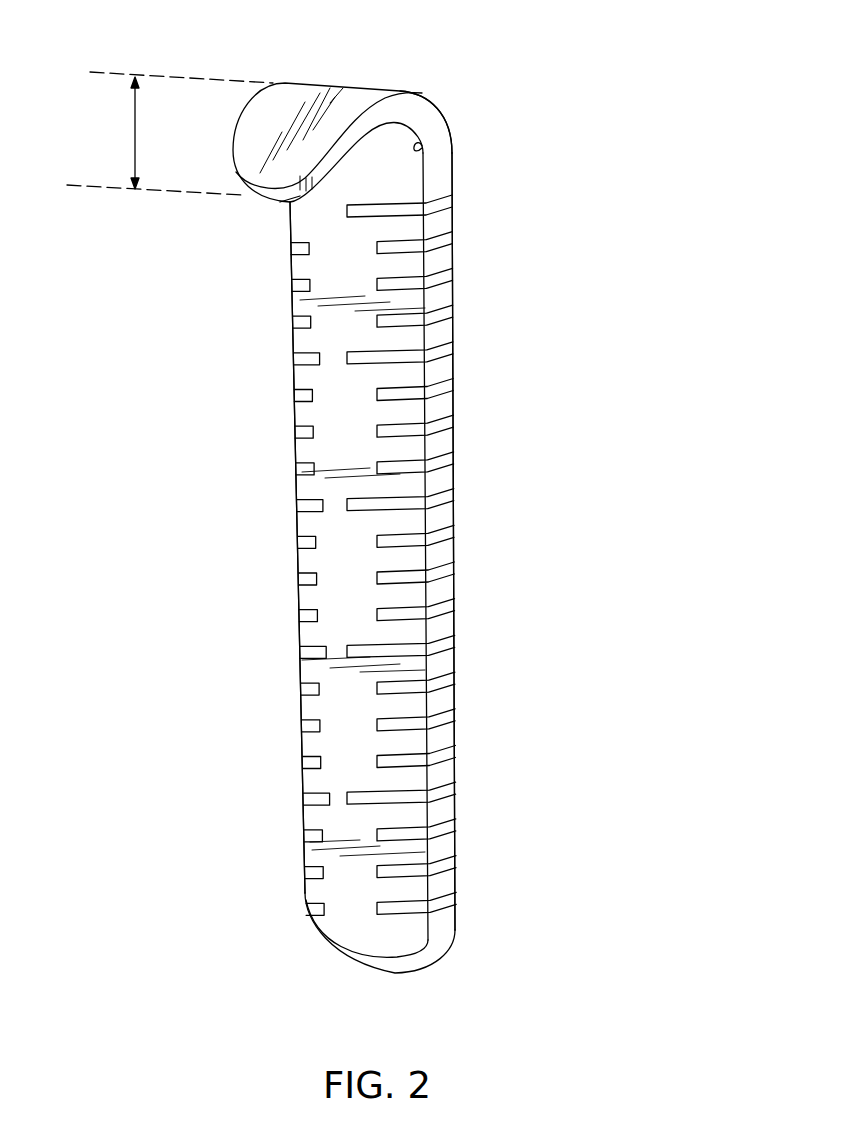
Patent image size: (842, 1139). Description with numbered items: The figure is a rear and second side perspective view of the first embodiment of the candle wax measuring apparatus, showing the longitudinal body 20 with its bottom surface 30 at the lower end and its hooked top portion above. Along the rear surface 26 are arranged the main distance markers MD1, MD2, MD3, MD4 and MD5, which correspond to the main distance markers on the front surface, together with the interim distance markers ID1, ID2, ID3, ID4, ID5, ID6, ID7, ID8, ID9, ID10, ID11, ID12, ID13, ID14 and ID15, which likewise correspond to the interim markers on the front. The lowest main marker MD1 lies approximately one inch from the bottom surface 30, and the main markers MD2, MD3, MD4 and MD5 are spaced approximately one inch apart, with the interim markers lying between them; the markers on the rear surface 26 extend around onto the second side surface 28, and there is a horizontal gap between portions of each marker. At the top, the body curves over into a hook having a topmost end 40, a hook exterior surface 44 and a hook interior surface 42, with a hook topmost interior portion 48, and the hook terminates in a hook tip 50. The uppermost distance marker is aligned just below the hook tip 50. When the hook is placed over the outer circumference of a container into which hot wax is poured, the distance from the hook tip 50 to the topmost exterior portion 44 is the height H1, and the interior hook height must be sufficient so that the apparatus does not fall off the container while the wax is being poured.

The longitudinal body 20 is at (232, 62).
The topmost end 40 is at (317, 83).
The hook exterior surface 44 is at (258, 160).
The hook topmost interior portion 48 is at (413, 123).
The hook interior surface 42 is at (425, 153).
The hook tip 50 is at (275, 203).
The hook height H1 is at (170, 133).
The rear surface 26 is at (310, 560).
The second side surface 28 is at (448, 520).
The bottom surface 30 is at (388, 973).
The main distance marker MD5 is at (422, 210).
The main distance marker MD4 is at (425, 360).
The main distance marker MD3 is at (420, 501).
The main distance marker MD2 is at (420, 650).
The main distance marker MD1 is at (413, 797).
The interim distance marker ID15 is at (422, 247).
The interim distance marker ID14 is at (425, 290).
The interim distance marker ID13 is at (425, 326).
The interim distance marker ID12 is at (425, 396).
The interim distance marker ID11 is at (425, 433).
The interim distance marker ID10 is at (425, 470).
The interim distance marker ID9 is at (427, 538).
The interim distance marker ID8 is at (417, 578).
The interim distance marker ID7 is at (417, 617).
The interim distance marker ID6 is at (420, 687).
The interim distance marker ID5 is at (417, 725).
The interim distance marker ID4 is at (413, 765).
The interim distance marker ID3 is at (425, 835).
The interim distance marker ID2 is at (420, 872).
The interim distance marker ID1 is at (420, 910).